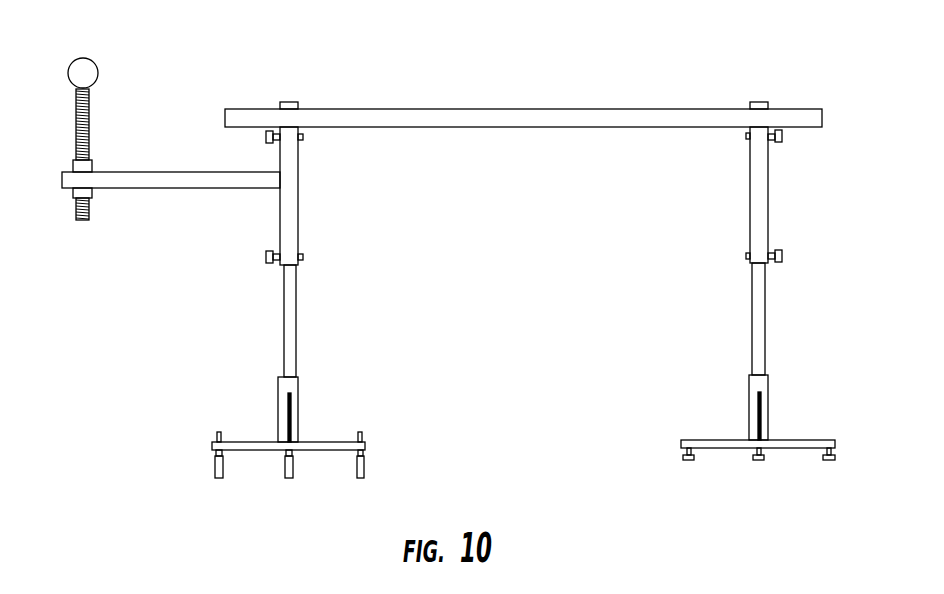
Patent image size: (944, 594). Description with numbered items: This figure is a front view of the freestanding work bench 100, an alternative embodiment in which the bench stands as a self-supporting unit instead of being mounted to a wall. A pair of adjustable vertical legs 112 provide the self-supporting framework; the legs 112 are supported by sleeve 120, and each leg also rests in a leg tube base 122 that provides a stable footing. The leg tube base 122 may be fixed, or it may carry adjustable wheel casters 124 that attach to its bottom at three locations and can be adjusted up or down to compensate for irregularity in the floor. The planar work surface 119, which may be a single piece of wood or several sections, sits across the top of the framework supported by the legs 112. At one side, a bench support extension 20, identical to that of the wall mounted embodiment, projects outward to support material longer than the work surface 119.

The freestanding work bench 100 is at (373, 79).
The bench support extension 20 is at (206, 194).
The work surface 119 is at (580, 128).
The adjustable vertical legs 112 is at (297, 292).
The leg tube base 122 is at (290, 415).
The adjustable wheel casters 124 is at (367, 468).
The sleeve 120 is at (682, 457).